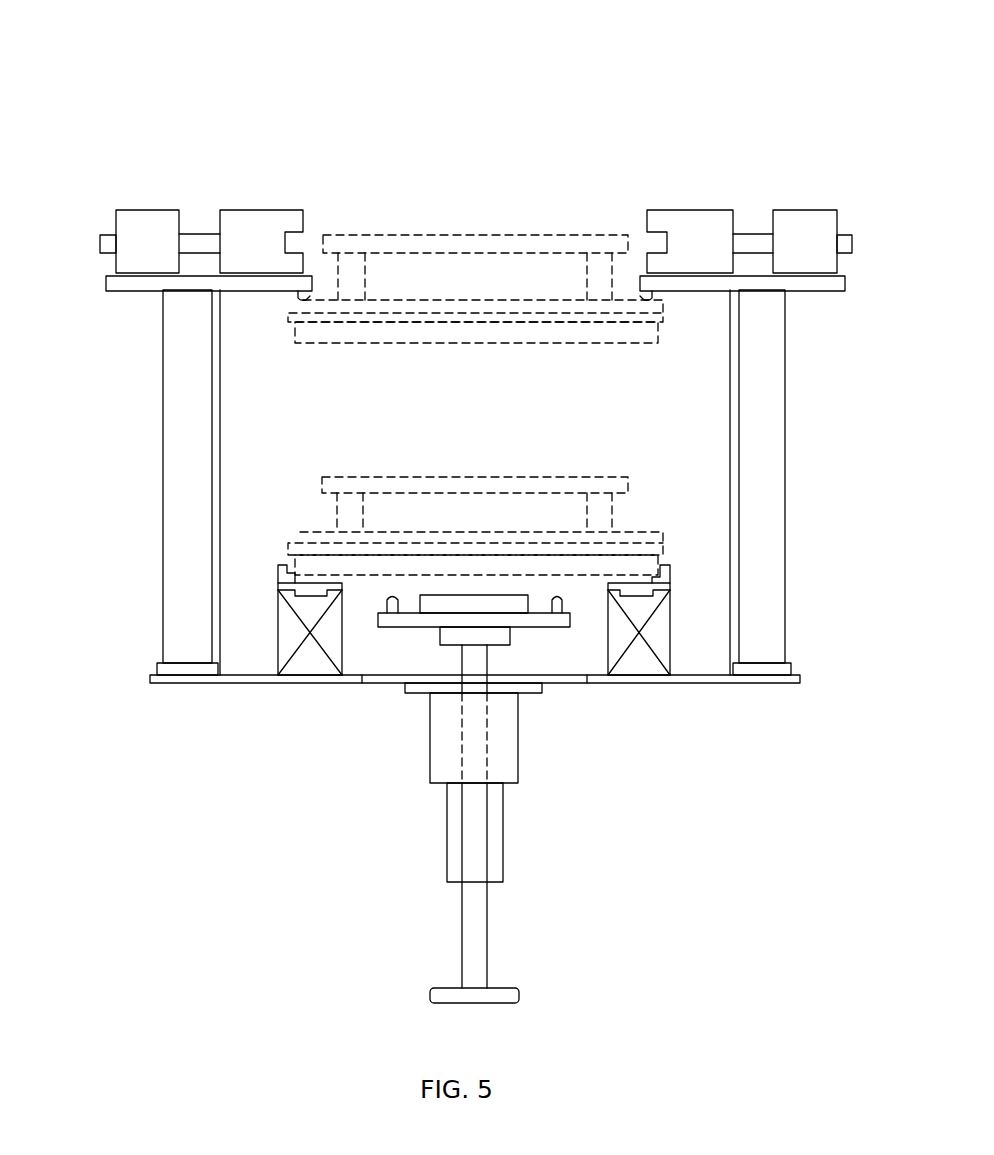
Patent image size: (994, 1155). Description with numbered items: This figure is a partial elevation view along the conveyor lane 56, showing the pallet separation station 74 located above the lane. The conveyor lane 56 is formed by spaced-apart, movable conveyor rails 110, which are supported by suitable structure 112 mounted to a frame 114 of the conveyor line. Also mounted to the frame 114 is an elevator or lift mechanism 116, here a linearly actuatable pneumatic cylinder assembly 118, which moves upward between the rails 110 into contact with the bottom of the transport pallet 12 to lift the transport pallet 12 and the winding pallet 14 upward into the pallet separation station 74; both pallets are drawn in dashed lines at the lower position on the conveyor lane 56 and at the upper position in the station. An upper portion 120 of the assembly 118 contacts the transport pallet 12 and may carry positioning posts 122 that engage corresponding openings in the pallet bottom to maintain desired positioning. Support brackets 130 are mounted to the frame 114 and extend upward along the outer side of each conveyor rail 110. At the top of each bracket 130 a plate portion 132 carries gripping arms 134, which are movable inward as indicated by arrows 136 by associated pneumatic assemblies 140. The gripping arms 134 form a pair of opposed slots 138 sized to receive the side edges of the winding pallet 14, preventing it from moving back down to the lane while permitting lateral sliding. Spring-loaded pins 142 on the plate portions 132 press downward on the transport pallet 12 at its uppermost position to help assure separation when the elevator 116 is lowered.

The pallet separation station 74 is at (305, 100).
The transport pallet 12 is at (508, 345).
The winding pallet 14 is at (493, 235).
The conveyor lane 56 is at (683, 560).
The conveyor rails 110 is at (280, 565).
The support structure 112 is at (318, 668).
The frame 114 is at (700, 683).
The elevator or lift mechanism 116 is at (368, 768).
The pneumatic cylinder assembly 118 is at (518, 770).
The upper portion 120 is at (400, 627).
The positioning posts 122 is at (570, 605).
The support brackets 130 is at (165, 470).
The plate portion 132 is at (108, 283).
The gripping arms 134 is at (225, 210).
The arrows 136 is at (290, 190).
The opposed slots 138 is at (302, 240).
The pneumatic assemblies 140 is at (135, 210).
The spring-loaded pins 142 is at (296, 300).